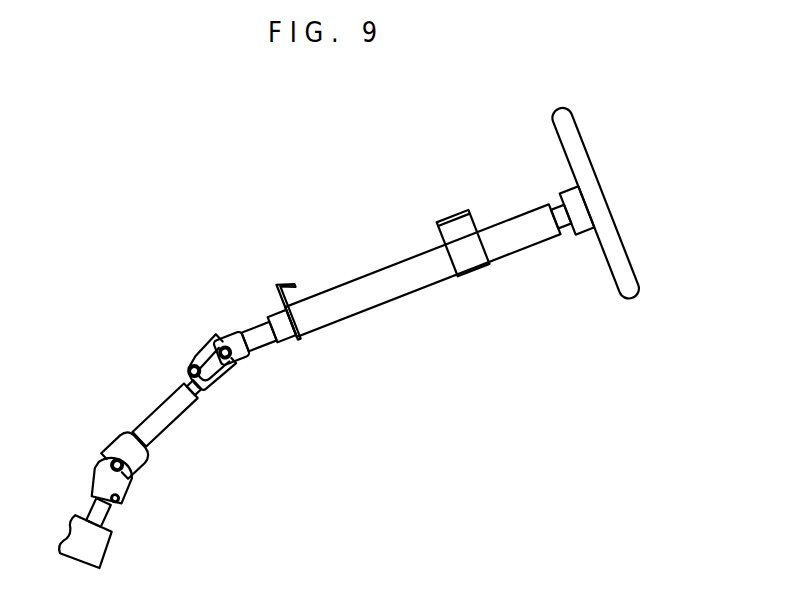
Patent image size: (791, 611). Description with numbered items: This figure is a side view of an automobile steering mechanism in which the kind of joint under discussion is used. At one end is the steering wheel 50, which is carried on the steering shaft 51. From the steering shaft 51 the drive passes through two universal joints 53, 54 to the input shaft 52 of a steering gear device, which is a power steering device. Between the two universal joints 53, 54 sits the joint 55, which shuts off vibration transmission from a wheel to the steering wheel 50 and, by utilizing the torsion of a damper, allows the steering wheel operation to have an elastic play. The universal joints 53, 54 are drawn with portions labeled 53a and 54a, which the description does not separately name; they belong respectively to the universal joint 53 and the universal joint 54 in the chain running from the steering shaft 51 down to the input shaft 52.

The steering wheel 50 is at (580, 141).
The steering shaft 51 is at (262, 351).
The input shaft of a steering gear device 52 is at (97, 546).
The universal joint 53 is at (205, 332).
The yoke of universal joint 53a is at (200, 368).
The universal joint 54 is at (93, 463).
The yoke of universal joint 54a is at (120, 450).
The joint 55 is at (187, 418).